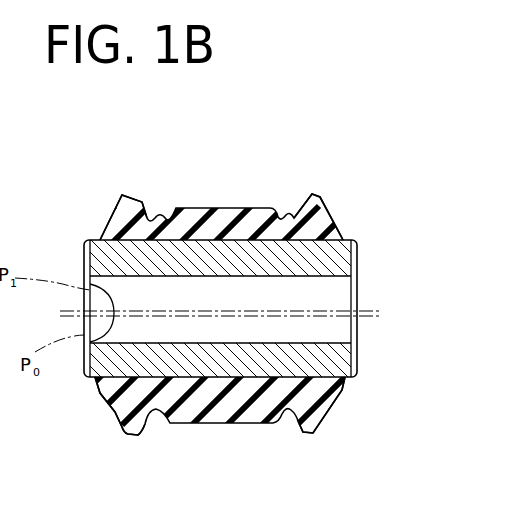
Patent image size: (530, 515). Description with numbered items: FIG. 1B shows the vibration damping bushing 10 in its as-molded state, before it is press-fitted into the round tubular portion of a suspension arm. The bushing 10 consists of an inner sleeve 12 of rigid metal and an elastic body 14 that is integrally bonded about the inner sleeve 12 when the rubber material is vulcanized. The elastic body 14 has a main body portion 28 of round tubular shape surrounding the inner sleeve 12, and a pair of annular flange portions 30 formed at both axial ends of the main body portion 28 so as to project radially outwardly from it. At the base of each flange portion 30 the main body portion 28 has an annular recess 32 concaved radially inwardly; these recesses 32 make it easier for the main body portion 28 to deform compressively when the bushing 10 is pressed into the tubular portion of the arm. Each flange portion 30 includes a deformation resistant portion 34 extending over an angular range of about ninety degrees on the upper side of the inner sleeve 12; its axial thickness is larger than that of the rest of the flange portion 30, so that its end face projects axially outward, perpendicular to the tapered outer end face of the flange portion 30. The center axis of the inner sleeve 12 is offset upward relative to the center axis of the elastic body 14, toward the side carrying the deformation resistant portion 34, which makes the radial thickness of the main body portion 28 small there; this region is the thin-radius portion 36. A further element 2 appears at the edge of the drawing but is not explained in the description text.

The vibration isolating bushing 10 is at (250, 159).
The inner sleeve 12 is at (350, 358).
The elastic rubber body 14 is at (250, 424).
The lower rubber portion 28 is at (217, 423).
The lower projections 30 is at (138, 428).
The sleeve wall portions 32 is at (176, 222).
The upper projections 34 is at (98, 210).
The upper rubber portion 36 is at (205, 208).
The mounting member 2 is at (4, 392).